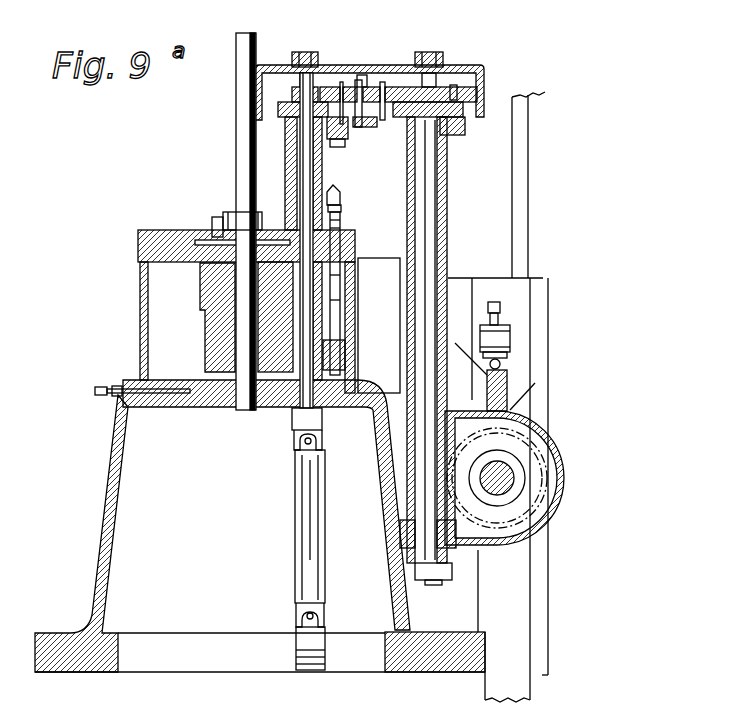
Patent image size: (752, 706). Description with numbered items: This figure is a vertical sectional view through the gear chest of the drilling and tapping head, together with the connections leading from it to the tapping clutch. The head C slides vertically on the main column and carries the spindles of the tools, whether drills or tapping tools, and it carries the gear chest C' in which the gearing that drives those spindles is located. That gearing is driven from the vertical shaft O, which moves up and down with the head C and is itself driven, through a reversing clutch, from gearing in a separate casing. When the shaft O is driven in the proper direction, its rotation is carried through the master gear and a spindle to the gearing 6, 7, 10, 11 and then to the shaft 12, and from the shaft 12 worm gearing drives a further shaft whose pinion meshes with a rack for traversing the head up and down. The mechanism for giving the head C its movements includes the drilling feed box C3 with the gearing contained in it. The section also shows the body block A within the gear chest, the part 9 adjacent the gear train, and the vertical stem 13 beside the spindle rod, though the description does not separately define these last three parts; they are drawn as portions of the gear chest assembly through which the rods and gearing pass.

The gearing 6 is at (285, 112).
The gearing 7 is at (327, 66).
The pinion block 9 is at (355, 127).
The gearing 10 is at (387, 87).
The gearing 11 is at (453, 90).
The shaft 12 is at (427, 255).
The valve stem 13 is at (303, 315).
The vertical shaft O is at (240, 184).
The housing block A is at (223, 328).
The head C is at (260, 533).
The gear chest C' is at (211, 371).
The drilling feed box C3 is at (512, 482).